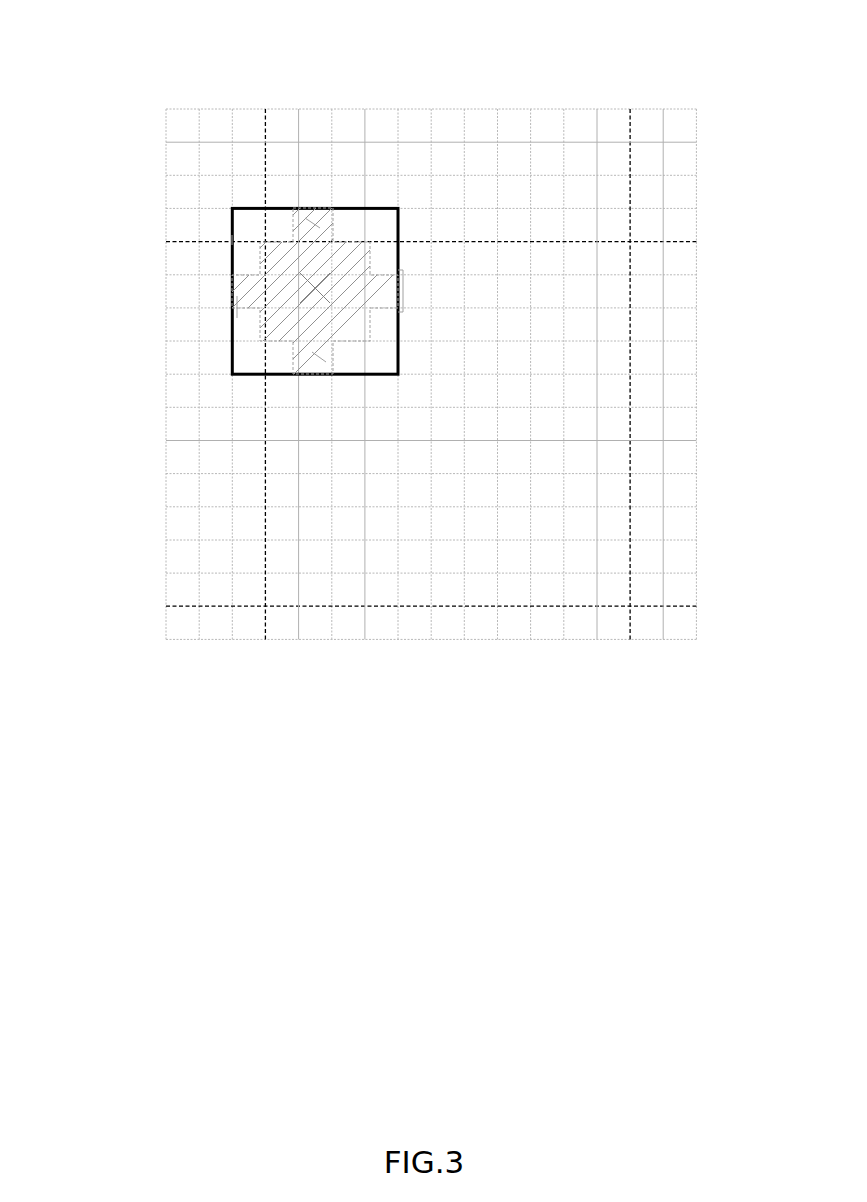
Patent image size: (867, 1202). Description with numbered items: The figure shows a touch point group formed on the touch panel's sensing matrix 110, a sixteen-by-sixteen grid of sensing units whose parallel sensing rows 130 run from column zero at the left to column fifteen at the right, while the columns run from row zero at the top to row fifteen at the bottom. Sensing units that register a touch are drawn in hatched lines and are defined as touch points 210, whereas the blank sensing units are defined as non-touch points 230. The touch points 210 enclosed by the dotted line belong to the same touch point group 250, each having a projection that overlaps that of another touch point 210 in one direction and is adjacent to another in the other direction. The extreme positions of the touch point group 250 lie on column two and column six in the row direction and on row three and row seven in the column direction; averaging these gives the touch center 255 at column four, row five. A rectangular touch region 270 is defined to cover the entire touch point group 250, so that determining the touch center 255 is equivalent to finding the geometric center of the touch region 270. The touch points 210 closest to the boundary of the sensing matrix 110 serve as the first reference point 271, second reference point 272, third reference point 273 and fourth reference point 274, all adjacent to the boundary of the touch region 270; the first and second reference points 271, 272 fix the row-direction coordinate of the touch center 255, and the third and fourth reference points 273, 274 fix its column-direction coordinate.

The sensing matrix 110 is at (176, 24).
The sensing row 130 is at (707, 123).
The non-touch point 230 is at (613, 193).
The touch point 210 is at (348, 255).
The touch point group 250 is at (258, 247).
The touch center 255 is at (315, 318).
The touch region 270 is at (232, 232).
The first reference point 271 is at (240, 305).
The second reference point 272 is at (398, 262).
The third reference point 273 is at (313, 225).
The fourth reference point 274 is at (320, 355).